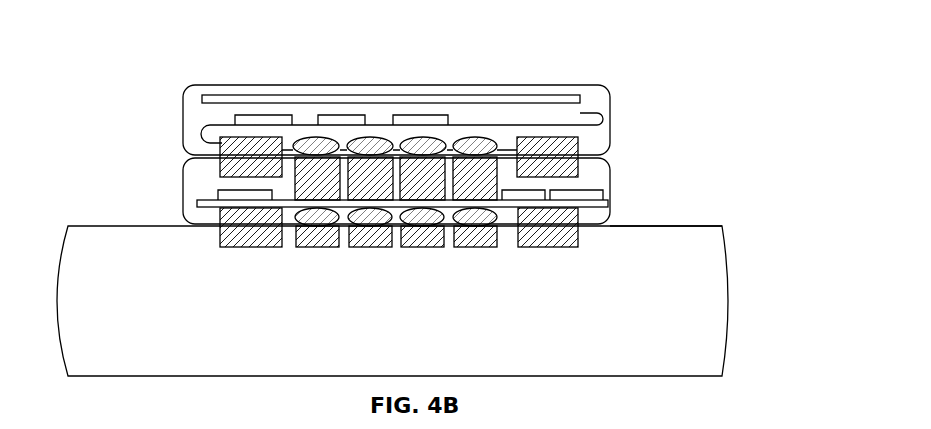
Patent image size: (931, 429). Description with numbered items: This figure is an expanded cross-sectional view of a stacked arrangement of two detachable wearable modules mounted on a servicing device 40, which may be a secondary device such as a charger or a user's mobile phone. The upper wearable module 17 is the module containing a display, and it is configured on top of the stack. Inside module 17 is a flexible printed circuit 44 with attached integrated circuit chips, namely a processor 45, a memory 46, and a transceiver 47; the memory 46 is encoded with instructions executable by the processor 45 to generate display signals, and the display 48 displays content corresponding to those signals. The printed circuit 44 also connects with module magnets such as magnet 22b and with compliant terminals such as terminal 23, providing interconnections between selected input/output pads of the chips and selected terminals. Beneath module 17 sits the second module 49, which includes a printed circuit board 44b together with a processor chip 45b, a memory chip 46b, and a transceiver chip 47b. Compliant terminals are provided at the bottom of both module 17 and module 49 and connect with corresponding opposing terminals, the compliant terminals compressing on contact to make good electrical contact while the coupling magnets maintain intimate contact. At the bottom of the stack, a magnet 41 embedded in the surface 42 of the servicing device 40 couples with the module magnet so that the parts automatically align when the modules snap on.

The wearable module 17 is at (593, 93).
The module magnet 22b is at (232, 147).
The compliant terminal 23 is at (370, 141).
The servicing device 40 is at (713, 303).
The magnet 41 is at (240, 235).
The surface 42 is at (683, 226).
The flexible printed circuit 44 is at (487, 136).
The printed circuit board 44b is at (203, 207).
The processor 45 is at (268, 117).
The processor chip 45b is at (267, 194).
The memory 46 is at (347, 116).
The memory chip 46b is at (518, 193).
The transceiver 47 is at (418, 116).
The transceiver chip 47b is at (588, 193).
The display 48 is at (308, 102).
The module 49 is at (190, 188).